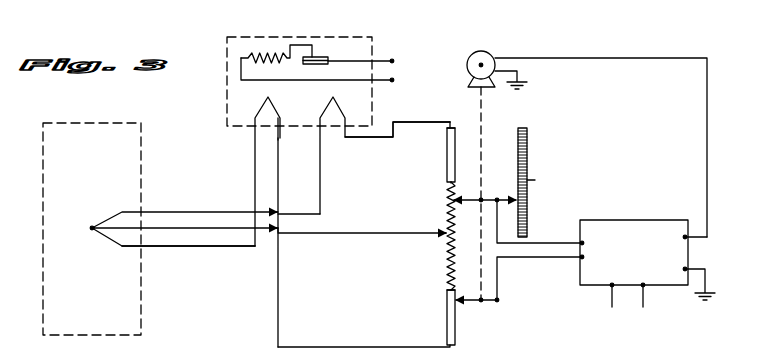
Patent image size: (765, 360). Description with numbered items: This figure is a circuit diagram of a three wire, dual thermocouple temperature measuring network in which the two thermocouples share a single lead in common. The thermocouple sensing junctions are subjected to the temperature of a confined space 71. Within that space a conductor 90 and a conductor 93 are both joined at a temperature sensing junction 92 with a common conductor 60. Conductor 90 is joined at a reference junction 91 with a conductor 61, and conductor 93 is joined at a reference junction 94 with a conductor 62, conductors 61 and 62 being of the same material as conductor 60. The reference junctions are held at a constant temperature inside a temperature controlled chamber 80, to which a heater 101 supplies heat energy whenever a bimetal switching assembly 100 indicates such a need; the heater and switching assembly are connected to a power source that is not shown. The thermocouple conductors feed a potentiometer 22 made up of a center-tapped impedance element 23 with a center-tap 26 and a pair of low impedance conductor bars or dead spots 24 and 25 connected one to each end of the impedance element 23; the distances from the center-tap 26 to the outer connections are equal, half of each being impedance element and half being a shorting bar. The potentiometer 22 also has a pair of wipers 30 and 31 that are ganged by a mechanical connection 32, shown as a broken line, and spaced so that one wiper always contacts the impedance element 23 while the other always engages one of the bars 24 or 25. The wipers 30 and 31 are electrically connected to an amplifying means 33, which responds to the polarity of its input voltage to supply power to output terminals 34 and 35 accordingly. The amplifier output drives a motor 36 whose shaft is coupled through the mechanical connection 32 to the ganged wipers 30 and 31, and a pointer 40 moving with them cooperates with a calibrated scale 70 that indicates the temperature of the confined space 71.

The confined space 71 is at (43, 232).
The temperature sensing junction 92 is at (92, 226).
The conductor 93 is at (189, 247).
The reference junction 94 is at (267, 96).
The reference junction 91 is at (335, 97).
The conductor 90 is at (286, 213).
The temperature controlled chamber 80 is at (255, 34).
The heater 101 is at (250, 56).
The bimetal switching assembly 100 is at (313, 54).
The conductor 60 is at (318, 235).
The conductor 62 is at (391, 347).
The conductor 61 is at (426, 122).
The potentiometer wiper 30 is at (463, 152).
The low impedance conductor bar 24 is at (447, 150).
The potentiometer 22 is at (438, 185).
The impedance element 23 is at (447, 222).
The center-tap 26 is at (446, 240).
The low impedance conductor bar 25 is at (445, 302).
The potentiometer wiper 31 is at (457, 306).
The mechanical connection 32 is at (485, 126).
The motor 36 is at (491, 53).
The pointer 40 is at (497, 198).
The calibrated scale 70 is at (528, 138).
The amplifying means 33 is at (619, 220).
The output terminal 34 is at (685, 236).
The output terminal 35 is at (684, 270).